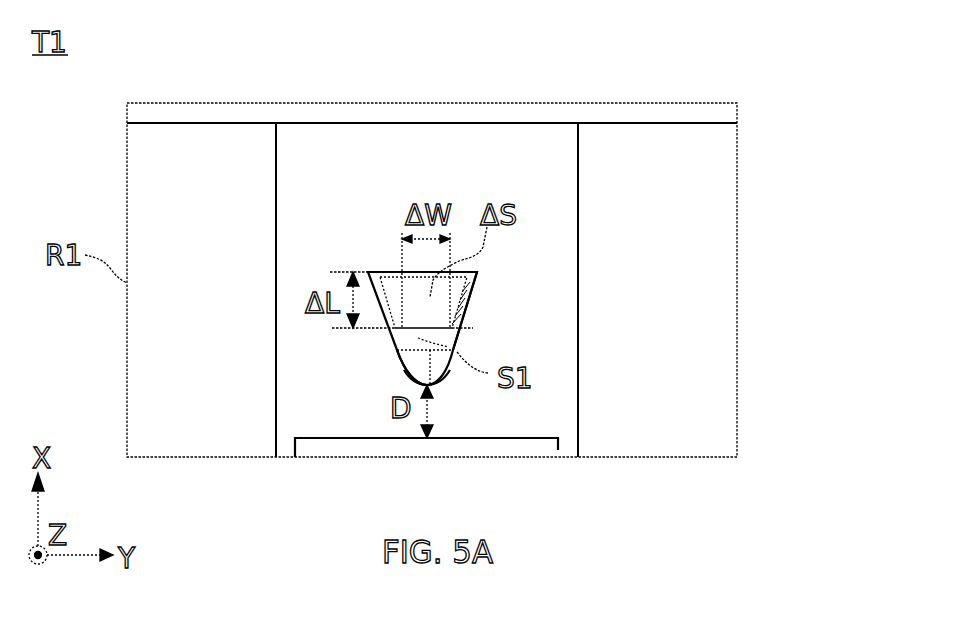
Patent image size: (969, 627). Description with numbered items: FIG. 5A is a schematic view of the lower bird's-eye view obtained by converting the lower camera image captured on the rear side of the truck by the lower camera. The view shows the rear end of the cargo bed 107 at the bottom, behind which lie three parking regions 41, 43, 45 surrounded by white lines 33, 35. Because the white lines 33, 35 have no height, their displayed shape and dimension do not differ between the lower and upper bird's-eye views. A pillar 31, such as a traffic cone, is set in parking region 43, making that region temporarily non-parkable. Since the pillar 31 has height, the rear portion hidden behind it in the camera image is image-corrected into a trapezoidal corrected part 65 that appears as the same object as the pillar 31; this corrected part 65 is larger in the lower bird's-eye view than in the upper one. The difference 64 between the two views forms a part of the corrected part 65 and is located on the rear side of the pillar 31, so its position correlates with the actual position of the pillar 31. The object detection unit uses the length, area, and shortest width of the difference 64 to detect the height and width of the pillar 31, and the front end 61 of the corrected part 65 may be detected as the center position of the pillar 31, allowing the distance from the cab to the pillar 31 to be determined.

The pillar 31 is at (418, 362).
The white line 33 is at (276, 268).
The white line 35 is at (422, 123).
The parking region 41 is at (170, 127).
The parking region 43 is at (483, 138).
The parking region 45 is at (615, 138).
The front end 61 is at (428, 385).
The difference 64 is at (467, 304).
The corrected part 65 is at (397, 271).
The cargo bed 107 is at (558, 450).